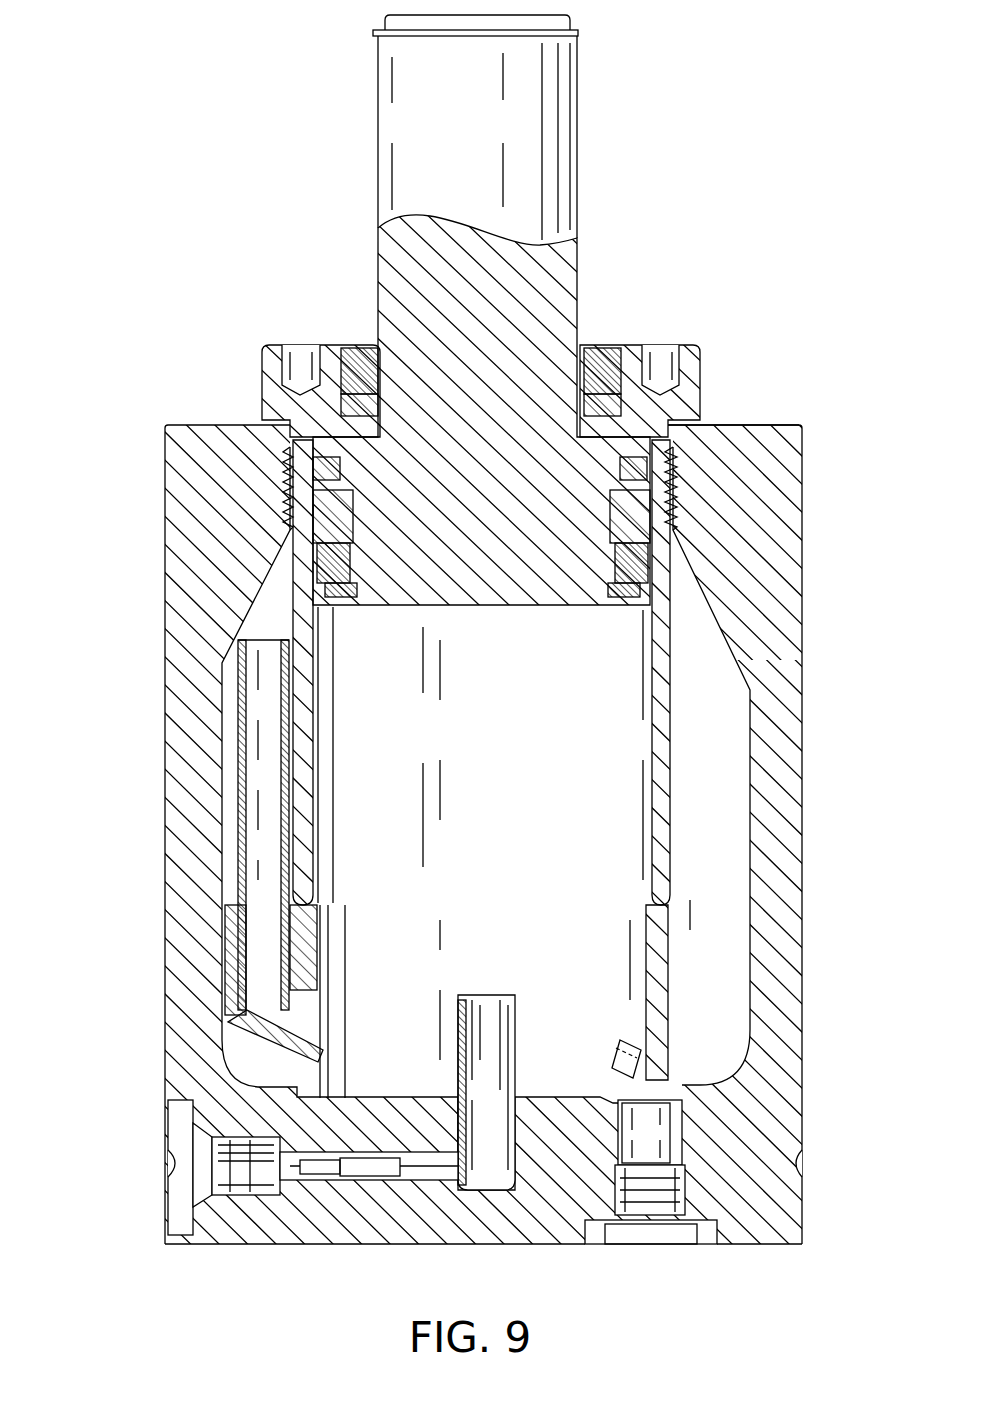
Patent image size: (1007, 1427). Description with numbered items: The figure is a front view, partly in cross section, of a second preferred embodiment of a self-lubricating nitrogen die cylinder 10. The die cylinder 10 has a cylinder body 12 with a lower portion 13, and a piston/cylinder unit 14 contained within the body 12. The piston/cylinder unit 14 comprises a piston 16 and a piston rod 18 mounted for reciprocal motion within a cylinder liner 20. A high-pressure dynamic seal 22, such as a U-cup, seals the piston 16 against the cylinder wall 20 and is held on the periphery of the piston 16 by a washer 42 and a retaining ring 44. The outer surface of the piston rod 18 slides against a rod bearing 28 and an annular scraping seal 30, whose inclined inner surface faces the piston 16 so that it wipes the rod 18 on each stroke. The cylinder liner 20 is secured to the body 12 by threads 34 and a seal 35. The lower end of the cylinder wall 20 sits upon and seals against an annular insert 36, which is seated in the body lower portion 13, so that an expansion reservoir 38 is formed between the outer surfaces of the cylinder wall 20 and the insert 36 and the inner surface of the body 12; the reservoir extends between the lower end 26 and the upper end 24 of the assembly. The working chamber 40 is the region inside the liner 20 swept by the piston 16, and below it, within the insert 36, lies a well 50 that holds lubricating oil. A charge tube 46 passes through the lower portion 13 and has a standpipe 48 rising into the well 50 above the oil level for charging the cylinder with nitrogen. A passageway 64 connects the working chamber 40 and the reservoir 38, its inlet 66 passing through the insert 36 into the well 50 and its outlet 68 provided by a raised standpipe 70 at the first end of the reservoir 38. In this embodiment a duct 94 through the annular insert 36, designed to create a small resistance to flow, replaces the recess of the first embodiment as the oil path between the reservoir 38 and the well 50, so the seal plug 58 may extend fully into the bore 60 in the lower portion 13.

The nitrogen die cylinder 10 is at (125, 242).
The cylinder body 12 is at (163, 528).
The cylinder body lower portion 13 is at (410, 1222).
The piston/cylinder unit 14 is at (672, 690).
The piston 16 is at (467, 610).
The piston rod 18 is at (580, 180).
The cylinder liner 20 is at (312, 776).
The high-pressure dynamic seal 22 is at (640, 560).
The upper end 24 is at (768, 425).
The lower end 26 is at (735, 1248).
The rod bearing 28 is at (654, 382).
The annular scraping seal 30 is at (603, 345).
The threads 34 is at (280, 466).
The seal 35 is at (272, 412).
The annular insert 36 is at (671, 967).
The expansion reservoir 38 is at (686, 794).
The working chamber 40 is at (472, 788).
The washer 42 is at (632, 594).
The retaining ring 44 is at (348, 592).
The charge tube 46 is at (246, 1197).
The standpipe 48 is at (512, 1000).
The well 50 is at (400, 1053).
The seal plug 58 is at (665, 1121).
The bore 60 is at (688, 1145).
The passageway 64 is at (296, 995).
The inlet 66 is at (330, 1012).
The outlet 68 is at (243, 640).
The standpipe 70 is at (237, 775).
The duct 94 is at (650, 1070).